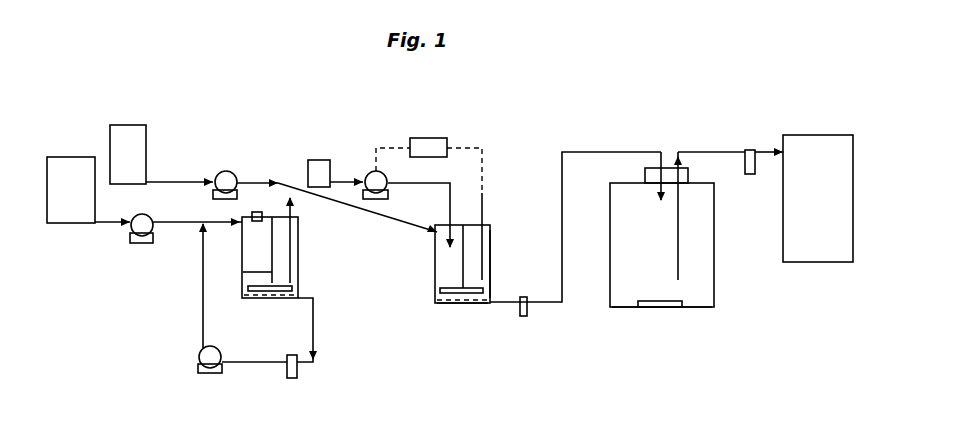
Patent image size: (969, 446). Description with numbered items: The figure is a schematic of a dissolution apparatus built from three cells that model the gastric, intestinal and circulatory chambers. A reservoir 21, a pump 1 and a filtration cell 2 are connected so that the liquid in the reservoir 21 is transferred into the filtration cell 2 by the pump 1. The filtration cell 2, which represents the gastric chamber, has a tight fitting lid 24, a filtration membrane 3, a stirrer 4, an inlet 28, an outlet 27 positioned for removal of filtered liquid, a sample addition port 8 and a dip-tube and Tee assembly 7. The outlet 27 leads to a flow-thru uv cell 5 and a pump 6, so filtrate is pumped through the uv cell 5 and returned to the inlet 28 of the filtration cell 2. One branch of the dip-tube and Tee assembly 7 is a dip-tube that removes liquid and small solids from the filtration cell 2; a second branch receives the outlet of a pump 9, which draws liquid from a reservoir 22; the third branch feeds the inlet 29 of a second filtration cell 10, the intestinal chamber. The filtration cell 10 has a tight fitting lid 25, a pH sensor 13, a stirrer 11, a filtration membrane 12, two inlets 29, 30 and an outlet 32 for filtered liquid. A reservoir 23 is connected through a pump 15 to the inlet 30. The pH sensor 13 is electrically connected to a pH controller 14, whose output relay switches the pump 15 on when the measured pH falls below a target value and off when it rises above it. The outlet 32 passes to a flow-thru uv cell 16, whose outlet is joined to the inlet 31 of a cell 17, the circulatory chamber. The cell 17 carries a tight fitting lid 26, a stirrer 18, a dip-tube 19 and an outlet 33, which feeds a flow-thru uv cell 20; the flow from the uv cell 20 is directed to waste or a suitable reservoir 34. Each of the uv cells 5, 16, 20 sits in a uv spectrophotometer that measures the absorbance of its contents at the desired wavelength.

The pump 1 is at (140, 243).
The filtration cell 2 is at (298, 272).
The filtration membrane 3 is at (262, 298).
The stirrer 4 is at (243, 272).
The flow-thru uv cell 5 is at (297, 370).
The pump 6 is at (198, 360).
The dip-tube and Tee assembly 7 is at (297, 203).
The sample addition port 8 is at (252, 214).
The pump 9 is at (218, 175).
The second filtration cell 10 is at (435, 258).
The stirrer 11 is at (455, 270).
The filtration membrane 12 is at (455, 304).
The pH sensor 13 is at (481, 207).
The pH controller 14 is at (430, 138).
The pump 15 is at (368, 173).
The flow-thru uv cell 16 is at (527, 316).
The cell 17 is at (628, 308).
The stirrer 18 is at (660, 308).
The dip-tube 19 is at (678, 235).
The flow-thru uv cell 20 is at (750, 150).
The reservoir 21 is at (80, 223).
The reservoir 22 is at (132, 125).
The reservoir 23 is at (308, 162).
The tight fitting lid 24 is at (298, 238).
The tight fitting lid 25 is at (490, 240).
The tight fitting lid 26 is at (671, 168).
The outlet 27 is at (296, 300).
The inlet 28 is at (212, 226).
The inlet 29 is at (432, 233).
The inlet 30 is at (450, 212).
The inlet 31 is at (658, 157).
The outlet 32 is at (492, 306).
The outlet 33 is at (683, 157).
The reservoir 34 is at (818, 198).